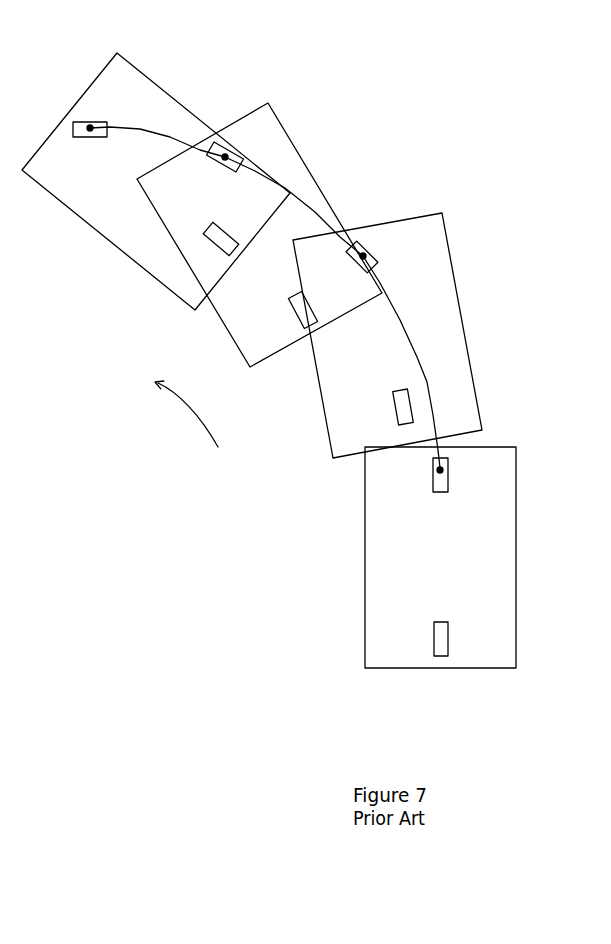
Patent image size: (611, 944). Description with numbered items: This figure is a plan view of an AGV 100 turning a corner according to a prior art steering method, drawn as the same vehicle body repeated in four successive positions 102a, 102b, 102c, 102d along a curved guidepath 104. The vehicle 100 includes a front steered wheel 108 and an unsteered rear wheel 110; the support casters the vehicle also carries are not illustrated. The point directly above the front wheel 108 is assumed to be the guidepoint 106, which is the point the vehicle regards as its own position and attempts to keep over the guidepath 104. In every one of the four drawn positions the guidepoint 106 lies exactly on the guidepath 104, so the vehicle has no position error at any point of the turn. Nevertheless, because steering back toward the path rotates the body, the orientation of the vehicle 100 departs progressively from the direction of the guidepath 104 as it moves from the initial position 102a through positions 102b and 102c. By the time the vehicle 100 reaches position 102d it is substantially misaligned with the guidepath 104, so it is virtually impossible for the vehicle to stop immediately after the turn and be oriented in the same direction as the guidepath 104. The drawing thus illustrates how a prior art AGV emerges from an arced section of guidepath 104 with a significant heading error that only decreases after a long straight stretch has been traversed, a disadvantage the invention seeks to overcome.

The AGV 100 is at (299, 360).
The initial position 102a is at (365, 573).
The position 102b is at (323, 411).
The position 102c is at (223, 322).
The position 102d is at (100, 238).
The guidepath 104 is at (430, 378).
The guidepoint 106 is at (90, 126).
The front steered wheel 108 is at (102, 120).
The unsteered rear wheel 110 is at (215, 230).